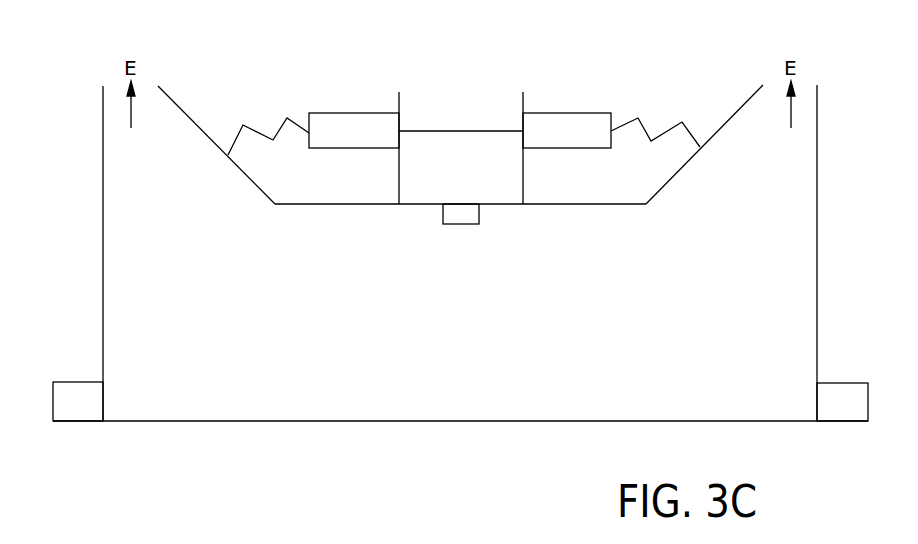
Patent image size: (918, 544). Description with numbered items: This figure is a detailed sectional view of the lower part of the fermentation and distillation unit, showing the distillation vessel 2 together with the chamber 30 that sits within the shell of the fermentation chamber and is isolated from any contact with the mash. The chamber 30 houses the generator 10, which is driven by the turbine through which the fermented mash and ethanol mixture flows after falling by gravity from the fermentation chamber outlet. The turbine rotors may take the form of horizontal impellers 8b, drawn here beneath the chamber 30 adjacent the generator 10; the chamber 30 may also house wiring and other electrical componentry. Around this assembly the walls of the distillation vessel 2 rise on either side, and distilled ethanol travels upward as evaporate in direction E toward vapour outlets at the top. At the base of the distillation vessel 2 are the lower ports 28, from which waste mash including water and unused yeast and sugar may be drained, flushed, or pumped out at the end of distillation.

The distillation vessel 2 is at (762, 286).
The lower ports 28 is at (79, 381).
The chamber 30 is at (492, 123).
The horizontal impellers 8b is at (429, 130).
The generator 10 is at (652, 119).